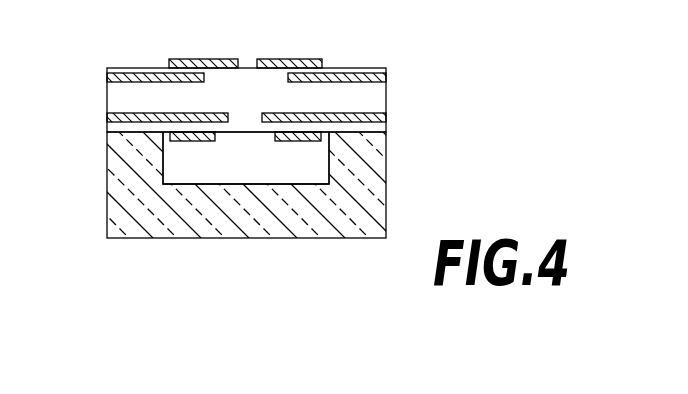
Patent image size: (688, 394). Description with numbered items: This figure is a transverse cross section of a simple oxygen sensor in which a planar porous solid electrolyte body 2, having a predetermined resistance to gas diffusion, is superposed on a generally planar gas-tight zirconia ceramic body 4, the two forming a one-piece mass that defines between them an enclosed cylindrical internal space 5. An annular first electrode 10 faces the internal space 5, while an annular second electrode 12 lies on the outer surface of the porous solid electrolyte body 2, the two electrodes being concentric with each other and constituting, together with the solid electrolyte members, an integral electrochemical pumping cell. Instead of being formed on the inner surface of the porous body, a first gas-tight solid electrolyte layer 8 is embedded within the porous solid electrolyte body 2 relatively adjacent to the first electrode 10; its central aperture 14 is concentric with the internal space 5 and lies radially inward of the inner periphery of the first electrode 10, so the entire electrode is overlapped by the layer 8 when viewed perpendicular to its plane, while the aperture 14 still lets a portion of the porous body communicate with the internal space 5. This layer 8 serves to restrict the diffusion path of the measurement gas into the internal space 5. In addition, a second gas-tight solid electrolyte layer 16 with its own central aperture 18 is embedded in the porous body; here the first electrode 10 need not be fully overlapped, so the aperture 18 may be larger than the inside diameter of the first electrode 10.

The porous solid electrolyte body 2 is at (372, 92).
The gas-tight zirconia ceramic body 4 is at (358, 197).
The internal space 5 is at (228, 170).
The first gas-tight solid electrolyte layer 8 is at (118, 118).
The first electrode 10 is at (188, 142).
The second electrode 12 is at (215, 59).
The central aperture 14 is at (255, 116).
The second gas-tight solid electrolyte layer 16 is at (139, 78).
The central aperture 18 is at (288, 78).